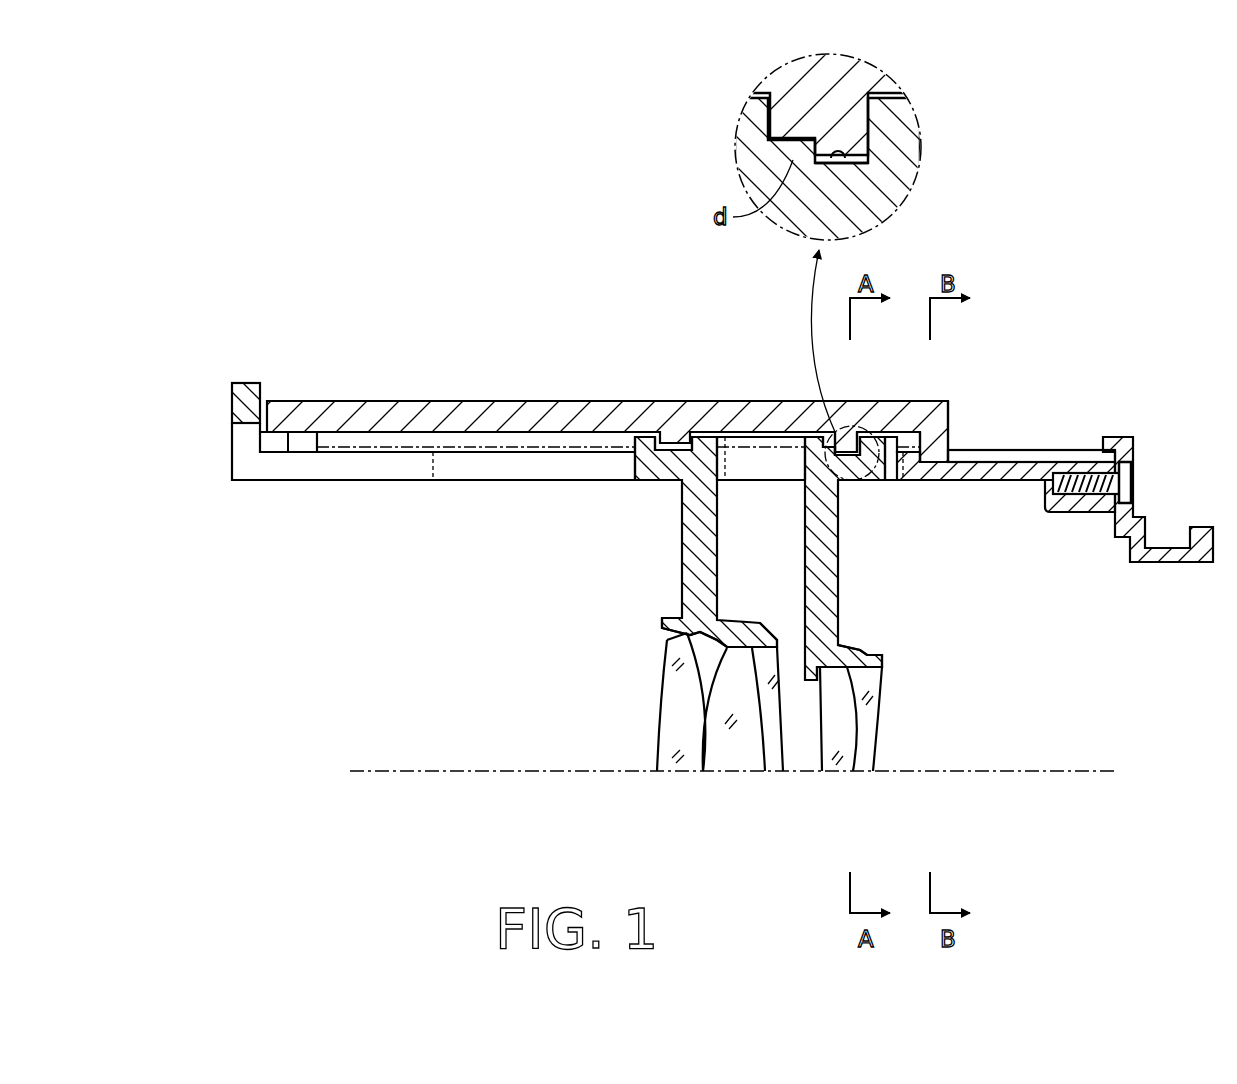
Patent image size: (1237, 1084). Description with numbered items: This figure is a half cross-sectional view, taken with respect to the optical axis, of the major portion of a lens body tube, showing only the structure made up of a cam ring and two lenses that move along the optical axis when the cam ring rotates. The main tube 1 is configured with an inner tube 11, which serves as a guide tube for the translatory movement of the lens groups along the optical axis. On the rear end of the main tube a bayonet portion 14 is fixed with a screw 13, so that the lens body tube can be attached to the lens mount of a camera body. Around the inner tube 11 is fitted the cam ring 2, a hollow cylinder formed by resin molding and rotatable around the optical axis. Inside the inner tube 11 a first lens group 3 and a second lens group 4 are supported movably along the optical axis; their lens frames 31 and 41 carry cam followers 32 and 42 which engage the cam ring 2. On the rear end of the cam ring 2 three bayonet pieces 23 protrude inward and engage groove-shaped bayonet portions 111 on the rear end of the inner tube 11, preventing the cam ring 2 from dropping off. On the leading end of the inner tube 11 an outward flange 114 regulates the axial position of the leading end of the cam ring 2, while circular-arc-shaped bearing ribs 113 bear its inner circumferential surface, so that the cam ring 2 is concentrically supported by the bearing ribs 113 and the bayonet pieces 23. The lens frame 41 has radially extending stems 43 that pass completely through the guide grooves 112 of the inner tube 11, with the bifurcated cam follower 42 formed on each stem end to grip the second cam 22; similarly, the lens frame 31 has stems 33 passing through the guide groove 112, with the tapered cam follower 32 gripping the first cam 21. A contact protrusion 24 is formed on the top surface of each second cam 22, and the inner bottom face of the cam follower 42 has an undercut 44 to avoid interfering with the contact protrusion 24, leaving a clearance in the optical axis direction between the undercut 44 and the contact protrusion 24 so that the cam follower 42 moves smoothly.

The main tube 1 is at (1038, 345).
The cam ring 2 is at (430, 410).
The first lens group 3 is at (718, 782).
The second lens group 4 is at (855, 782).
The inner tube 11 is at (1022, 468).
The screw 13 is at (1132, 482).
The bayonet portion 14 is at (1202, 555).
The first cam 21 is at (673, 440).
The second cam 22 is at (837, 440).
The bayonet piece 23 is at (947, 447).
The contact protrusion 24 is at (870, 150).
The lens frame 31 is at (687, 633).
The cam follower 32 is at (650, 470).
The stem 33 is at (687, 562).
The lens frame 41 is at (867, 658).
The cam follower 42 is at (882, 482).
The stem 43 is at (822, 605).
The undercut 44 is at (853, 167).
The bayonet portion 111 is at (1060, 455).
The guide groove 112 is at (350, 470).
The bearing rib 113 is at (277, 437).
The flange 114 is at (247, 391).